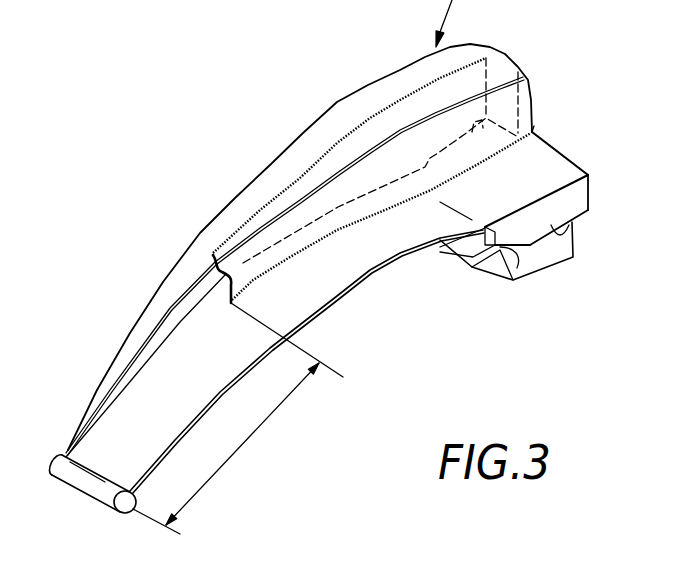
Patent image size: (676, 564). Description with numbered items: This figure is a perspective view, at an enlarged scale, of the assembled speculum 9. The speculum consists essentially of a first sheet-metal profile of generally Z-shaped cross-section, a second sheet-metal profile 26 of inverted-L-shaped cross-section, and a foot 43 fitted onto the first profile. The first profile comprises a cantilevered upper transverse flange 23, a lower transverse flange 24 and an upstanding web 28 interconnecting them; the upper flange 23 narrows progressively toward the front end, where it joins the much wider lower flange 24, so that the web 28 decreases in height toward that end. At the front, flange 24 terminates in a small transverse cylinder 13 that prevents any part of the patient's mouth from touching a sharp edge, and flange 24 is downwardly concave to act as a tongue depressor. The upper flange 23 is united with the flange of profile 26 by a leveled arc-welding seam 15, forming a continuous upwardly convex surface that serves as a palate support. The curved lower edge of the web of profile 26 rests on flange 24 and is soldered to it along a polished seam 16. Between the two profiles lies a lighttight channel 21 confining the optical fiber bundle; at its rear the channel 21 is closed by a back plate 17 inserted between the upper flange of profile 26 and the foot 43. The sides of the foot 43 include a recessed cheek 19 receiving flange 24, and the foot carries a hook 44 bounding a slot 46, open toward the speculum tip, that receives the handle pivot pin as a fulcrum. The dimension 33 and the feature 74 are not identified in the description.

The speculum 9 is at (350, 342).
The transverse cylinder 13 is at (84, 483).
The arc-welding seam 15 is at (373, 112).
The solder seam 16 is at (417, 198).
The back plate 17 is at (533, 82).
The cheek 19 is at (586, 192).
The lighttight channel 21 is at (215, 282).
The upper transverse flange 23 is at (298, 147).
The lower transverse flange 24 is at (388, 255).
The second sheet-metal profile 26 is at (551, 134).
The upstanding web 28 is at (167, 327).
The length dimension 33 is at (248, 440).
The foot 43 is at (562, 264).
The hook 44 is at (533, 268).
The slot 46 is at (503, 253).
The bore 74 is at (567, 235).